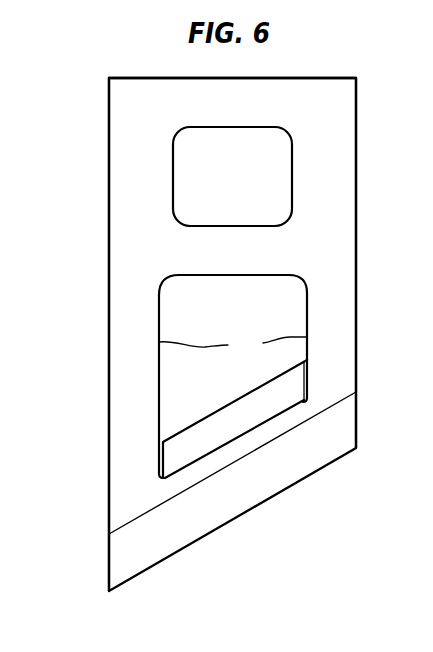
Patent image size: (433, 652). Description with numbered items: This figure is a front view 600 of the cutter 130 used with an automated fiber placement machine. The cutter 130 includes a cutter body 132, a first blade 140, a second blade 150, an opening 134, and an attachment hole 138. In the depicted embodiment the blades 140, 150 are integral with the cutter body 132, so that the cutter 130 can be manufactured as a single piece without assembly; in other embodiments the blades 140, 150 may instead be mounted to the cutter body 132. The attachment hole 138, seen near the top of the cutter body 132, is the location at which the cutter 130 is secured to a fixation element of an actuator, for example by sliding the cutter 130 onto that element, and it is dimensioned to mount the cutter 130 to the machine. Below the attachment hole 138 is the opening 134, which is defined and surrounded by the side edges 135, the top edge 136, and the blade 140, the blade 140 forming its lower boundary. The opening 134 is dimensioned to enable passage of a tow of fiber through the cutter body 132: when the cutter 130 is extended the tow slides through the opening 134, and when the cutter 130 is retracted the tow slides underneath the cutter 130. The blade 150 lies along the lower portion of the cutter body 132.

The front view 600 is at (262, 582).
The cutter 130 is at (83, 192).
The cutter body 132 is at (118, 216).
The opening 134 is at (178, 362).
The side edges 135 is at (233, 345).
The top edge 136 is at (220, 277).
The attachment hole 138 is at (269, 191).
The blade 140 is at (223, 430).
The blade 150 is at (248, 490).